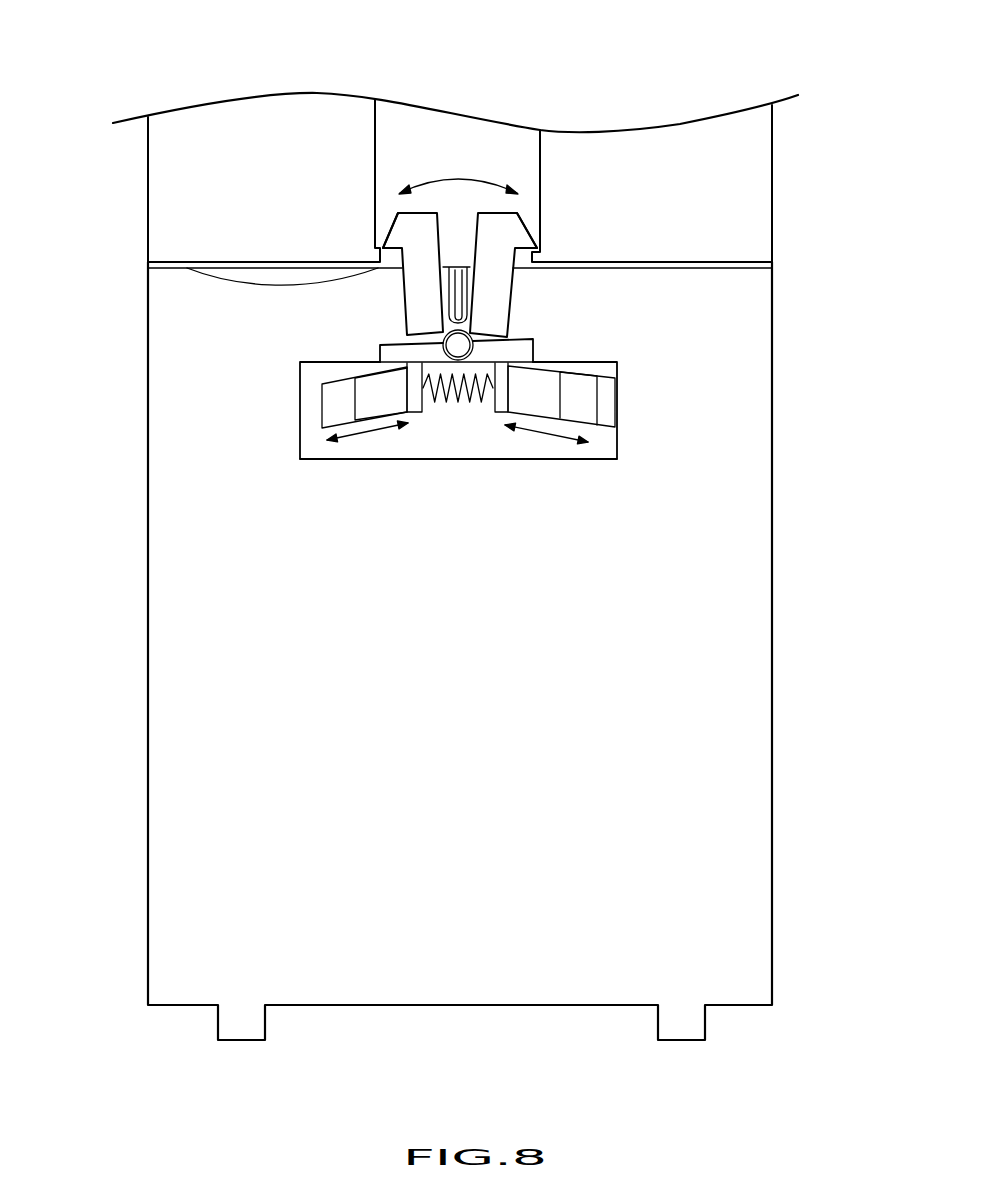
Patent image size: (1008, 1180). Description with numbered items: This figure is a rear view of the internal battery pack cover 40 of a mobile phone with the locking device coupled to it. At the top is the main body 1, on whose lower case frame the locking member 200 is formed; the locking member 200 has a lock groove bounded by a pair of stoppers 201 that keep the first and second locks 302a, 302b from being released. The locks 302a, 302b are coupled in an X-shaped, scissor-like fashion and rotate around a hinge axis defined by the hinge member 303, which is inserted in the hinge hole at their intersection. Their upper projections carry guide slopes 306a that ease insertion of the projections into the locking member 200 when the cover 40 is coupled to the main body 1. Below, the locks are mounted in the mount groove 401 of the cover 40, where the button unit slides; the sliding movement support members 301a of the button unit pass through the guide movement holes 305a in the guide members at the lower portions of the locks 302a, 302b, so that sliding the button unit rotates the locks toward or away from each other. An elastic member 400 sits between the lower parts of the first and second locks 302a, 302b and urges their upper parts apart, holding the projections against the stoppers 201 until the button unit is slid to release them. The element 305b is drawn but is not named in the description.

The main body 1 is at (760, 182).
The locking member 200 is at (468, 133).
The stoppers 201 is at (148, 262).
The cover 40 is at (738, 620).
The first lock 302a is at (413, 302).
The second lock 302b is at (498, 295).
The guide slopes 306a is at (528, 227).
The hinge member 303 is at (462, 340).
The sliding movement support members 301a is at (547, 390).
The guide movement hole 305a is at (590, 405).
The left slider 305b is at (355, 392).
The elastic member 400 is at (438, 408).
The mount groove 401 is at (503, 448).